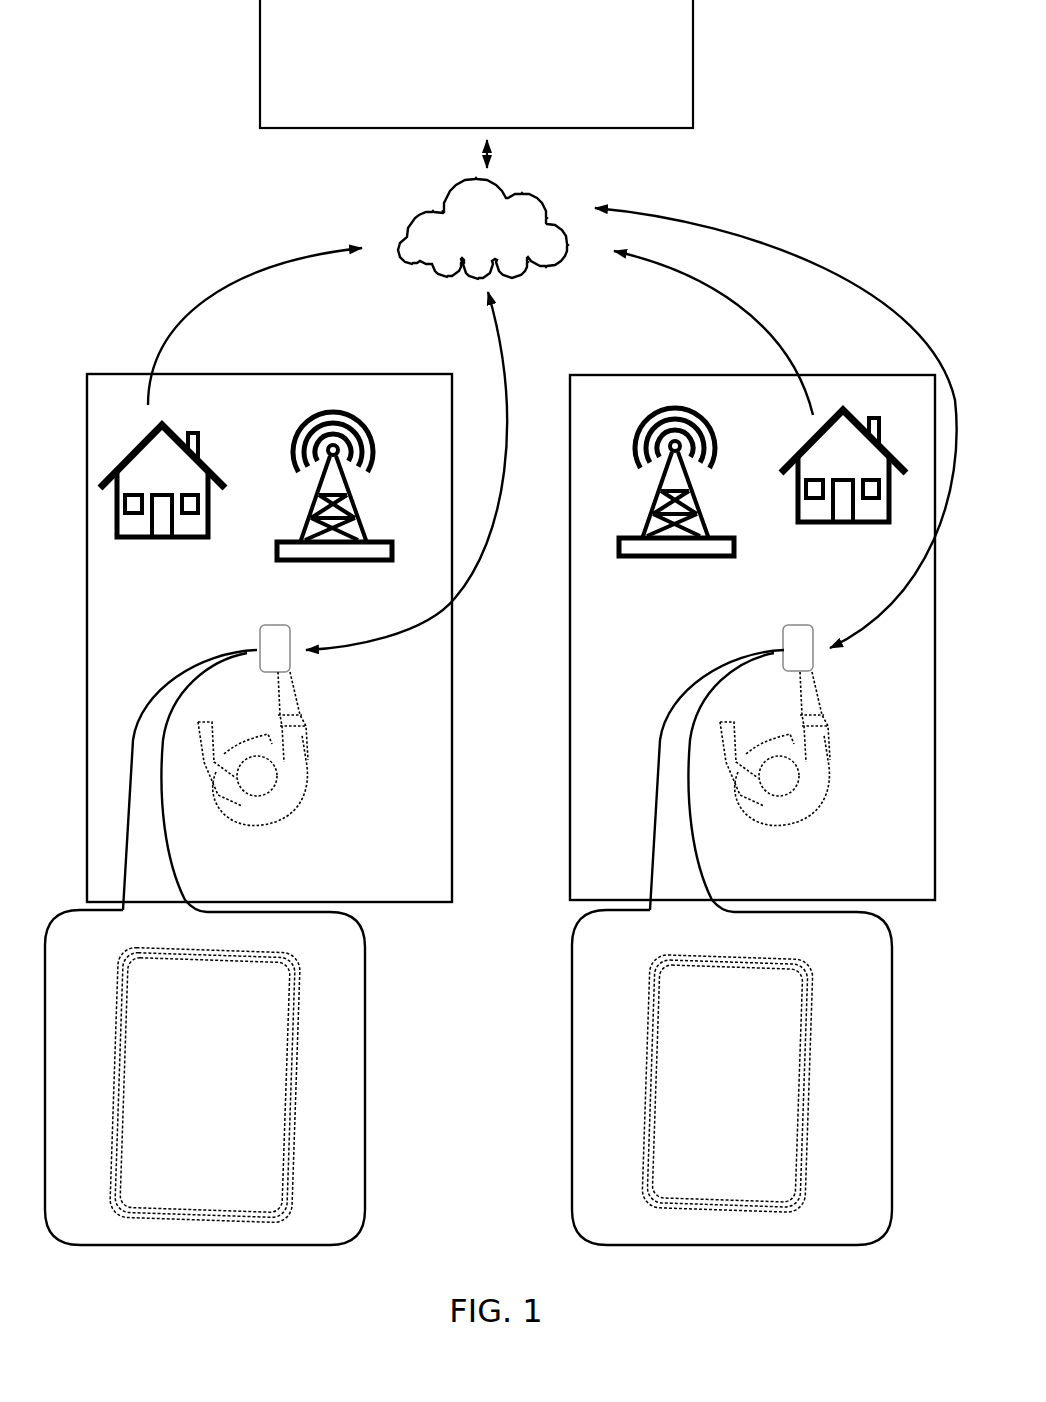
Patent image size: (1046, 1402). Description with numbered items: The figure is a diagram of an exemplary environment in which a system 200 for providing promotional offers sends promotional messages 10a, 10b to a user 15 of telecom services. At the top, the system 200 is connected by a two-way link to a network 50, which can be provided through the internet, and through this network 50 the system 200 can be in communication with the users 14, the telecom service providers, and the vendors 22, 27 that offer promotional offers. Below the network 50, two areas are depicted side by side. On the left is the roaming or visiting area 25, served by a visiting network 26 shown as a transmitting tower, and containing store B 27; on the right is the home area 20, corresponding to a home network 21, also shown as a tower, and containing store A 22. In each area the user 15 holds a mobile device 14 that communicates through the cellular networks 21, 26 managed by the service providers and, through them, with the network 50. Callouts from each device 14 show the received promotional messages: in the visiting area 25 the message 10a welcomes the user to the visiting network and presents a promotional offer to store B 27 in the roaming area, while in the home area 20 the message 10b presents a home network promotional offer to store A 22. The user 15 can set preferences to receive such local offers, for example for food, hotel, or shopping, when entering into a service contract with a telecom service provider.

The system for providing promotional offers 200 is at (468, 115).
The network 50 is at (473, 240).
The store B 27 is at (175, 432).
The visiting network 26 is at (369, 438).
The home network 21 is at (710, 432).
The store A 22 is at (851, 412).
The user device 14 is at (260, 626).
The user 15 is at (310, 773).
The visiting area 25 is at (405, 887).
The home area 20 is at (890, 881).
The promotional message 10a is at (288, 1226).
The promotional message 10b is at (836, 1219).